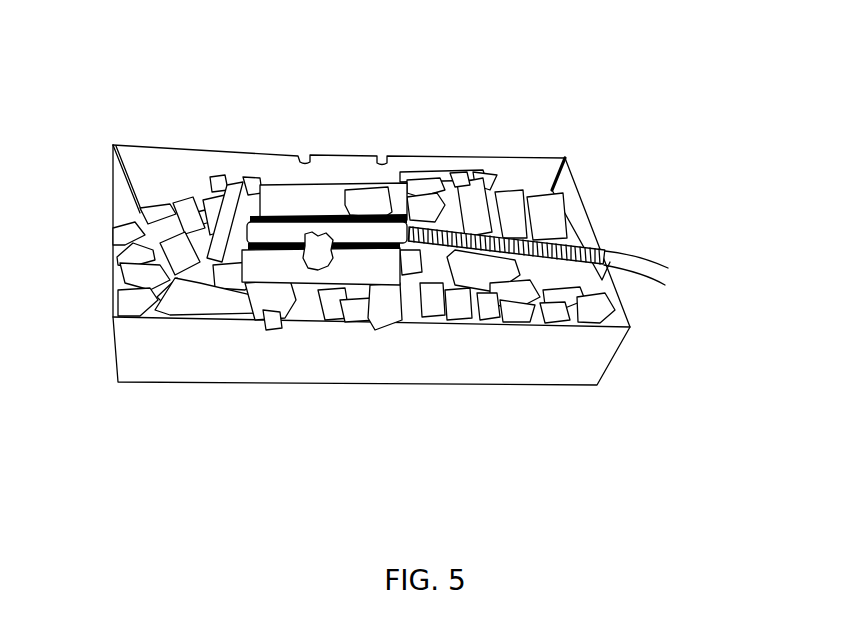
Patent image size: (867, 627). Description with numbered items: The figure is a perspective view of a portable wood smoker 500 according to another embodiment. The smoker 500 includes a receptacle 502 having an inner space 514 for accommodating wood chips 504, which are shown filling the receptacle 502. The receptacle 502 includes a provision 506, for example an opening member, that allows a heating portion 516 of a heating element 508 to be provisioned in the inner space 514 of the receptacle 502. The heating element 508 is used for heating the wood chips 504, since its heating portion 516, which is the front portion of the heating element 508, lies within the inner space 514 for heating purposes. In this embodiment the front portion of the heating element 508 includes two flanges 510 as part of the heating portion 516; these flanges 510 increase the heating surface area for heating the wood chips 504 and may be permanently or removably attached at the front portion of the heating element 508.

The portable wood smoker 500 is at (372, 300).
The receptacle 502 is at (215, 368).
The wood chips 504 is at (122, 288).
The provision 506 is at (600, 242).
The heating element 508 is at (620, 260).
The flanges 510 is at (301, 198).
The inner space 514 is at (143, 195).
The heating portion 516 is at (456, 192).